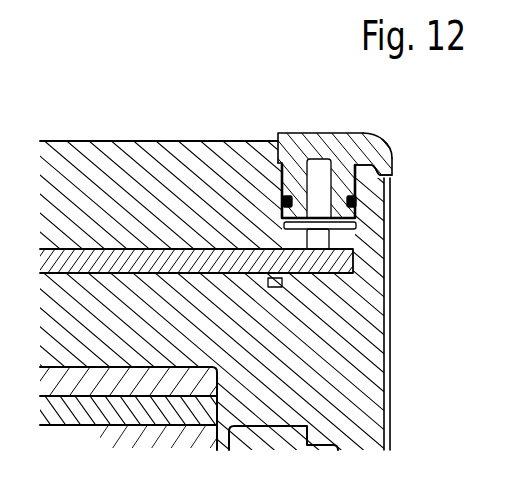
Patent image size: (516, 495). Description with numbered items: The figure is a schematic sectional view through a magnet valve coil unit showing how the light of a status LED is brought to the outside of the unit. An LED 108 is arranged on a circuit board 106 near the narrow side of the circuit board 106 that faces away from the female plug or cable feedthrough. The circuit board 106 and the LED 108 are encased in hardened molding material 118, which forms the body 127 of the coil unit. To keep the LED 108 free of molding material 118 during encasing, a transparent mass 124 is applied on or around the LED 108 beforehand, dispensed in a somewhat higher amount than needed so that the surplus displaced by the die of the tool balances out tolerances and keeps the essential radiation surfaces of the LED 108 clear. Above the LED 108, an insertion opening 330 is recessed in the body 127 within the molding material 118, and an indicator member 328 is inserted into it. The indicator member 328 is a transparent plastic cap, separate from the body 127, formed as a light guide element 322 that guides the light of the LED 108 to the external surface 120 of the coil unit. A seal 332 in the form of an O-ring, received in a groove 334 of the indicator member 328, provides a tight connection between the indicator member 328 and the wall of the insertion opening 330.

The circuit board 106 is at (325, 266).
The LED 108 is at (332, 241).
The molding material 118 is at (163, 164).
The external surface 120 is at (122, 141).
The transparent mass 124 is at (357, 224).
The body 127 is at (385, 392).
The light guide element 322 is at (317, 138).
The indicator member 328 is at (391, 146).
The insertion opening 330 is at (358, 212).
The seal 332 is at (284, 199).
The groove 334 is at (390, 177).